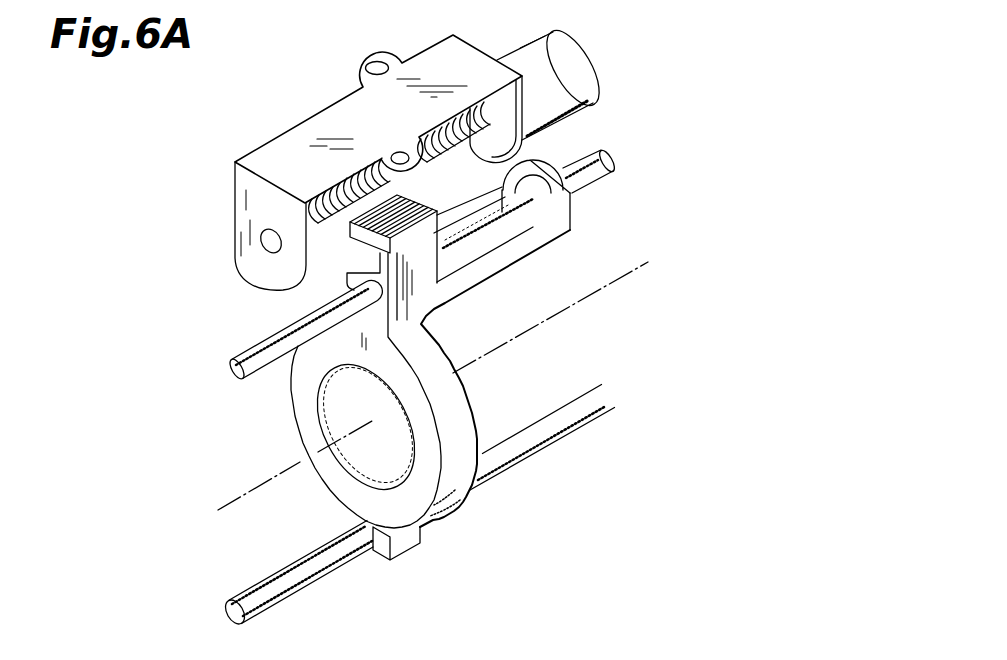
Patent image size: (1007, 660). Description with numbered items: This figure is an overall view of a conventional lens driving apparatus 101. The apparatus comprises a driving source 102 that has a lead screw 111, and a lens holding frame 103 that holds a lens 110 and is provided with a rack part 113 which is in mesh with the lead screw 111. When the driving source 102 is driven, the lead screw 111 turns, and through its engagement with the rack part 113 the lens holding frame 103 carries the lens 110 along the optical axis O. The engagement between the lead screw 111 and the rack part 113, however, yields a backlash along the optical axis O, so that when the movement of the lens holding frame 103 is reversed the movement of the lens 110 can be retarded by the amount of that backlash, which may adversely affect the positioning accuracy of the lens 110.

The lens driving apparatus 101 is at (723, 97).
The driving source 102 is at (560, 82).
The lens holding frame 103 is at (388, 360).
The lens 110 is at (343, 400).
The lead screw 111 is at (453, 153).
The rack part 113 is at (353, 230).
The optical axis O is at (597, 293).